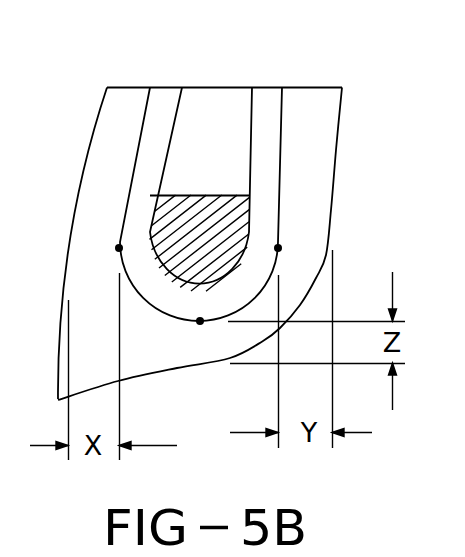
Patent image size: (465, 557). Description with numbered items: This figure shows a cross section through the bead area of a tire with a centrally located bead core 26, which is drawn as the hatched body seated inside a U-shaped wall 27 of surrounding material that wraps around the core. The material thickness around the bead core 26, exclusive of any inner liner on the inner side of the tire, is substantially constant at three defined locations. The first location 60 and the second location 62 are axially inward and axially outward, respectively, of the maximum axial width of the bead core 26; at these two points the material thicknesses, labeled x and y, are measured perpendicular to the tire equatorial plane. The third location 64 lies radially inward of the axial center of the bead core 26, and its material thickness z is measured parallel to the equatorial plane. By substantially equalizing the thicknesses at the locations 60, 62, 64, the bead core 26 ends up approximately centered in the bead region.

The bead core 26 is at (195, 217).
The belt groove wall 27 is at (265, 131).
The first location 60 is at (119, 248).
The second location 62 is at (278, 248).
The third location 64 is at (200, 321).